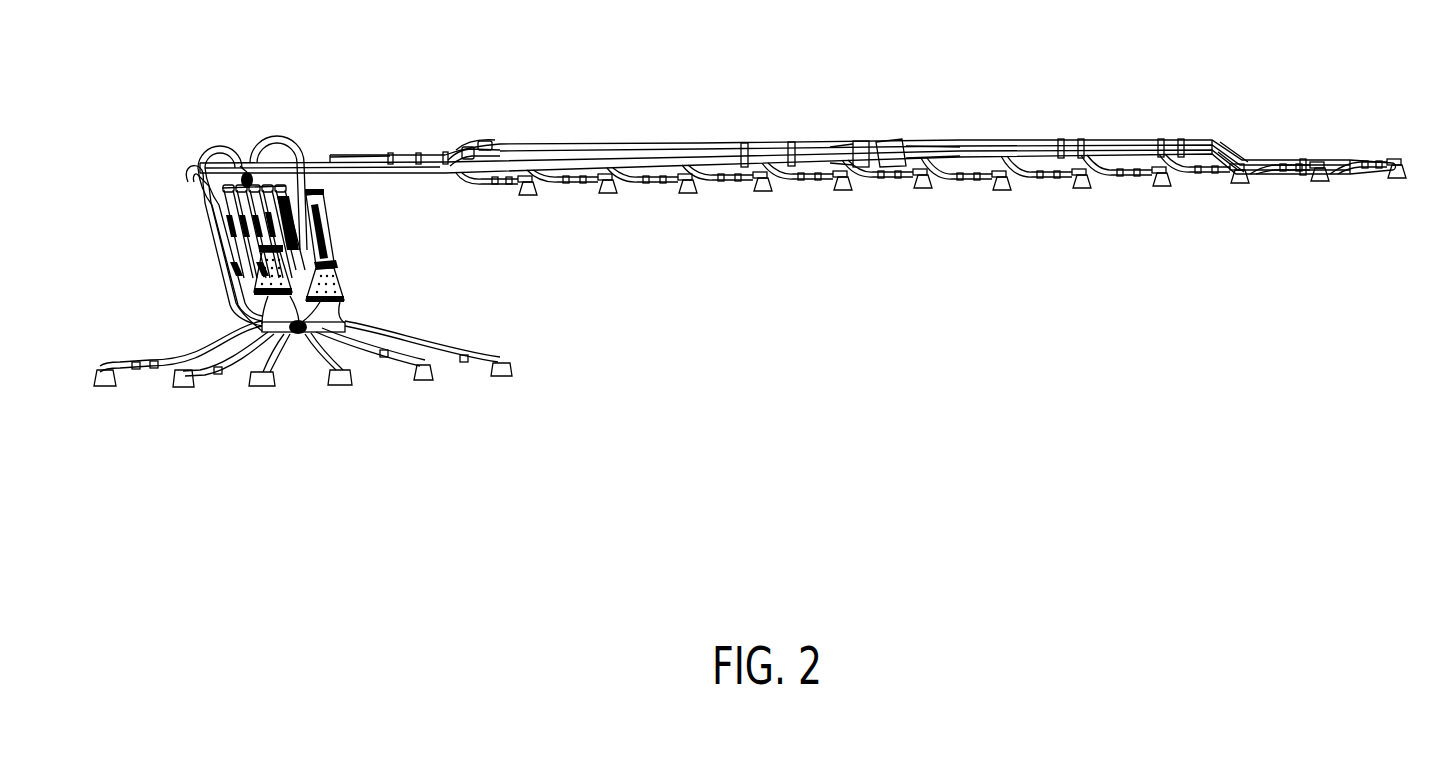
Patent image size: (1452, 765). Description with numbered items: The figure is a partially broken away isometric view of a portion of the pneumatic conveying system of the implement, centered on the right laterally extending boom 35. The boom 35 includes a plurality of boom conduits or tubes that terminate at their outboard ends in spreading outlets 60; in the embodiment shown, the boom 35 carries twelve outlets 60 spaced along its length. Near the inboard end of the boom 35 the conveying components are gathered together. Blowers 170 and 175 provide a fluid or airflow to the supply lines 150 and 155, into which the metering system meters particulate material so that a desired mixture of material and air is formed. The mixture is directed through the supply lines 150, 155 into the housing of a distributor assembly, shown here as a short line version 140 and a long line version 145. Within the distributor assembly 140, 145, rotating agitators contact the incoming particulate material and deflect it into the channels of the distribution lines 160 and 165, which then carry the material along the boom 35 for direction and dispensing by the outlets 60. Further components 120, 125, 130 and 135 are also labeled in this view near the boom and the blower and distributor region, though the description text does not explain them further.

The right laterally extending boom 35 is at (647, 139).
The outlets 60 is at (531, 196).
The boom section coupling 120 is at (357, 147).
The boom lower tube 125 is at (373, 178).
The right spray cone 130 is at (338, 292).
The left spray cone 135 is at (268, 276).
The short line version of the distributor assembly 140 is at (420, 147).
The long line version of the distributor assembly 145 is at (845, 139).
The supply line 150 is at (322, 160).
The supply line 155 is at (328, 165).
The distribution line 160 is at (486, 150).
The distribution line 165 is at (887, 145).
The blower 170 is at (335, 245).
The blower 175 is at (270, 240).